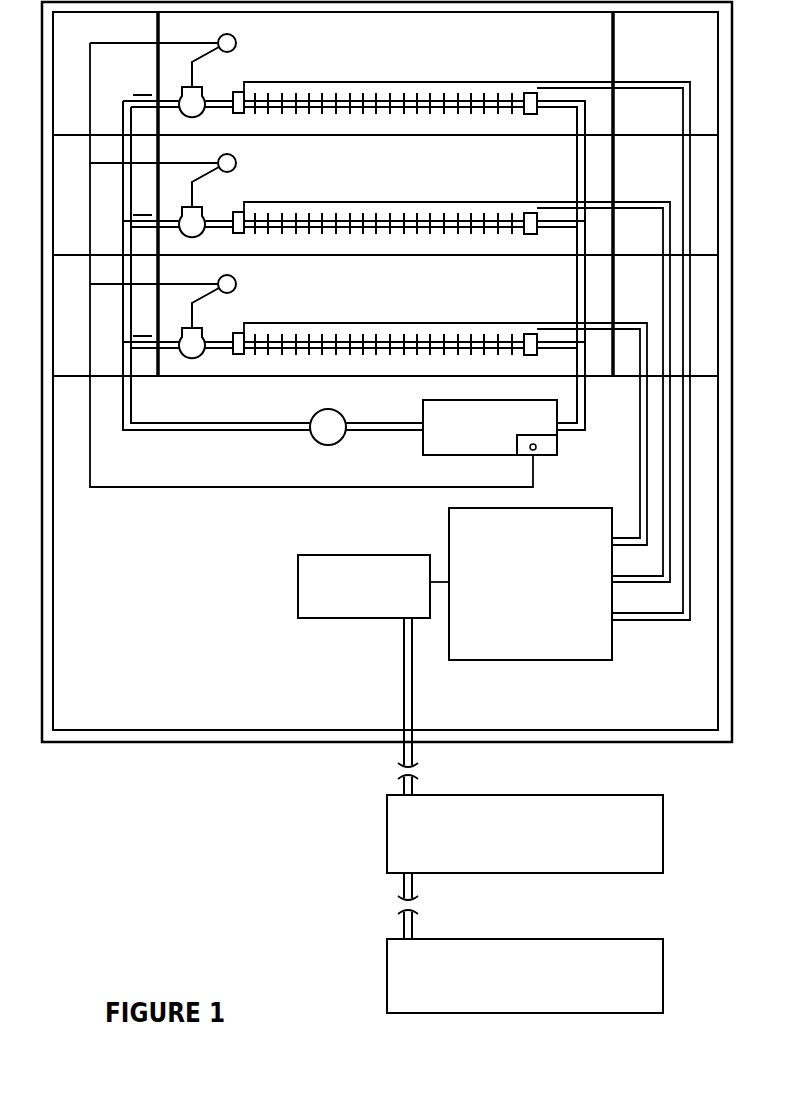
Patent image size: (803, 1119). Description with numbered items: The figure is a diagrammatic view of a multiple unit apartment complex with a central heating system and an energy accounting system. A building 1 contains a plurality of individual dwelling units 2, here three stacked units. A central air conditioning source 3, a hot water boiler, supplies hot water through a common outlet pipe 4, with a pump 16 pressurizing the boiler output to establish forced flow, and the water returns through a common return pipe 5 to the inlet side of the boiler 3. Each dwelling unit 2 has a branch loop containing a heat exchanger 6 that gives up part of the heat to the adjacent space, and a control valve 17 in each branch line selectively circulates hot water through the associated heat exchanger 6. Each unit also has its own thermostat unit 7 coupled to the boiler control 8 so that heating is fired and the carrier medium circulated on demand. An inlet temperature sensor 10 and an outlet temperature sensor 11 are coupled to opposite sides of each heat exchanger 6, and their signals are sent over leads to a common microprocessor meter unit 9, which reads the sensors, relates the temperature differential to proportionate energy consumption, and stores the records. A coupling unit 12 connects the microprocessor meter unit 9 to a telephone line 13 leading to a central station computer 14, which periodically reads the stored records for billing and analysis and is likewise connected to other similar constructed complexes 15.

The building 1 is at (223, 746).
The dwelling unit 2 is at (399, 53).
The central air conditioning source 3 is at (449, 459).
The common outlet pipe 4 is at (194, 437).
The common return pipe 5 is at (588, 392).
The heat exchanger 6 is at (441, 98).
The thermostat unit 7 is at (228, 58).
The boiler control 8 is at (552, 448).
The microprocessor meter unit 9 is at (594, 668).
The inlet temperature sensor 10 is at (245, 91).
The outlet temperature sensor 11 is at (530, 91).
The coupling unit 12 is at (292, 614).
The telephone line 13 is at (398, 716).
The central station computer 14 is at (654, 877).
The other similar constructed complexes 15 is at (650, 1017).
The pump 16 is at (313, 448).
The control valve 17 is at (177, 95).